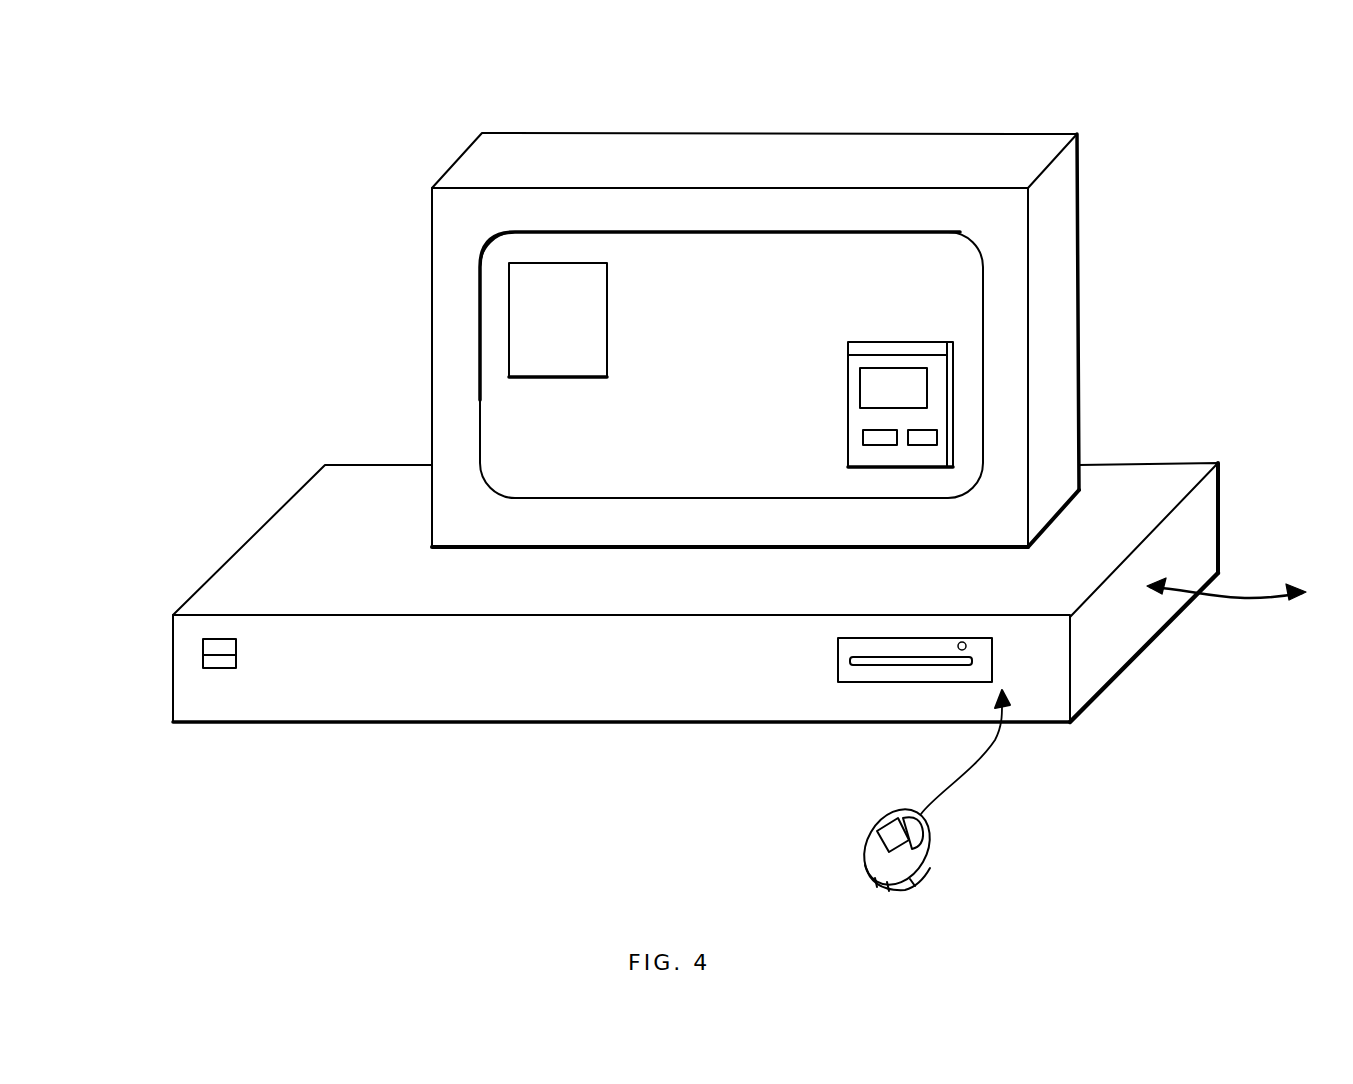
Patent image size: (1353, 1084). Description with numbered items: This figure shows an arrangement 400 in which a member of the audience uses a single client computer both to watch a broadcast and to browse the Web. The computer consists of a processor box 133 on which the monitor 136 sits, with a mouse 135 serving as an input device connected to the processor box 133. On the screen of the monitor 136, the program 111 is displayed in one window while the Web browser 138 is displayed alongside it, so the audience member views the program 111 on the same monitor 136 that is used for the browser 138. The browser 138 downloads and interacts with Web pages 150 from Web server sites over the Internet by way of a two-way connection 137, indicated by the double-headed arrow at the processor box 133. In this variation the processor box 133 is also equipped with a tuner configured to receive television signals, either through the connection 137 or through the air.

The arrangement 400 is at (739, 503).
The monitor 136 is at (763, 322).
The program 111 is at (508, 315).
The Web pages 150 is at (927, 387).
The Web browser 138 is at (1003, 404).
The processor box 133 is at (228, 557).
The two-way connection 137 is at (1235, 602).
The mouse 135 is at (922, 875).